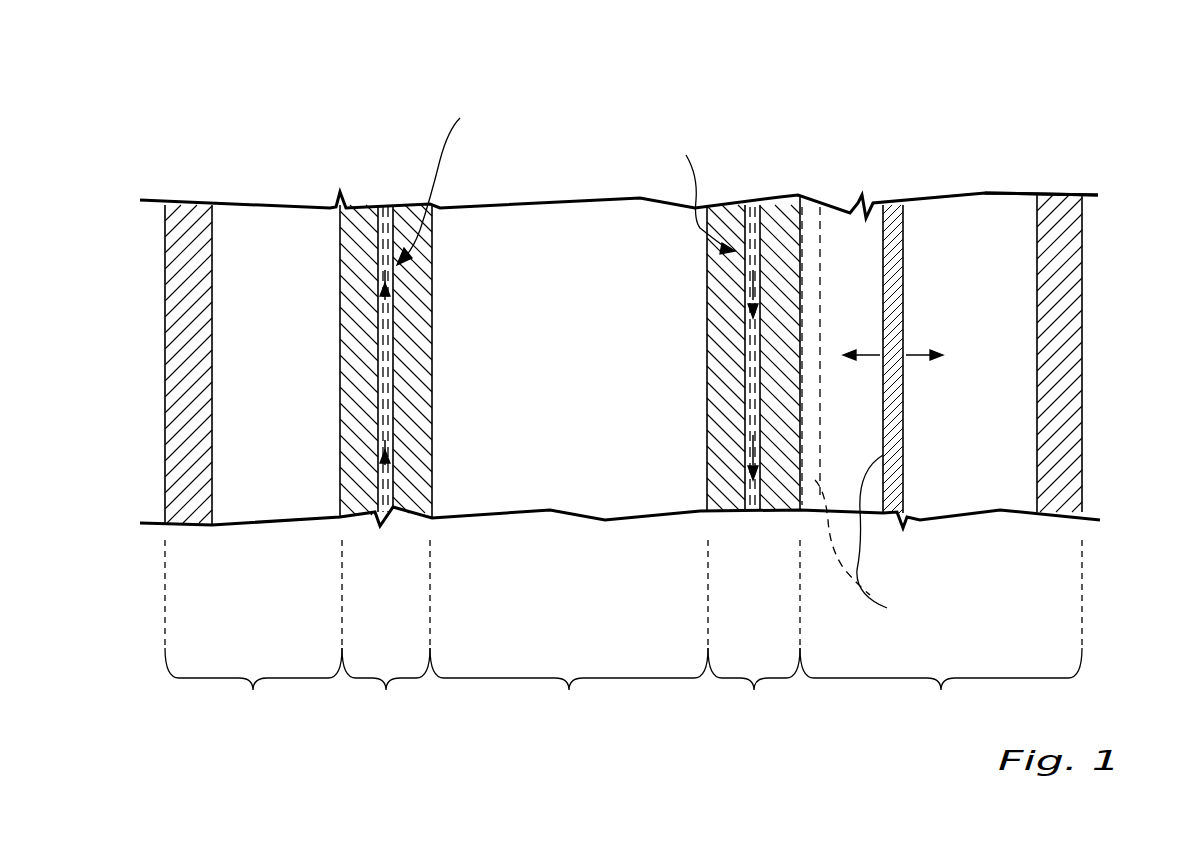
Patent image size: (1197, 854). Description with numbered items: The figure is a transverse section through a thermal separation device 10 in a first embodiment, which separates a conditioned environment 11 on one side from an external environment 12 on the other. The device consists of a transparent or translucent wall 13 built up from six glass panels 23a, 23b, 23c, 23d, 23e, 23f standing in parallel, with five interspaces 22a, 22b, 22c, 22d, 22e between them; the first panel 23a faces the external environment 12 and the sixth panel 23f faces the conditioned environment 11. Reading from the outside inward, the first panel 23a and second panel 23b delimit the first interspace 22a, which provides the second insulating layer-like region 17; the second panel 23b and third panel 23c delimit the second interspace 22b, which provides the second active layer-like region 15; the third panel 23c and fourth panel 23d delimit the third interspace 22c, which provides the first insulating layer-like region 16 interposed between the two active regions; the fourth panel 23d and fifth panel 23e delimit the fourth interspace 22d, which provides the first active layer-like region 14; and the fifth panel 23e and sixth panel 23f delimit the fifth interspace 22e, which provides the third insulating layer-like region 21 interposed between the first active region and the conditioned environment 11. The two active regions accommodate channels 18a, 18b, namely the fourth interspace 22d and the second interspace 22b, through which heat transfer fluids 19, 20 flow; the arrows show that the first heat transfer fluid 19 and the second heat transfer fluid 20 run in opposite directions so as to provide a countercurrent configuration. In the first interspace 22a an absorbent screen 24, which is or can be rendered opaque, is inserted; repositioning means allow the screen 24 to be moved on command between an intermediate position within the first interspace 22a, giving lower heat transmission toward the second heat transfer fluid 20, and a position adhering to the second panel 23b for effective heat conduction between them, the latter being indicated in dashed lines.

The thermal separation device 10 is at (1082, 128).
The conditioned environment 11 is at (148, 382).
The external environment 12 is at (1130, 376).
The transparent or translucent wall 13 is at (1095, 240).
The first active layer-like region 14 is at (386, 631).
The second active layer-like region 15 is at (754, 631).
The first insulating layer-like region 16 is at (569, 631).
The second insulating layer-like region 17 is at (941, 631).
The channel 18a is at (385, 527).
The channel 18b is at (752, 512).
The heat transfer fluid 19 is at (445, 183).
The heat transfer fluid 20 is at (698, 191).
The third insulating layer-like region 21 is at (253, 631).
The first interspace 22a is at (927, 225).
The second interspace 22b is at (752, 230).
The third interspace 22c is at (537, 320).
The fourth interspace 22d is at (385, 245).
The fifth interspace 22e is at (265, 255).
The first panel 23a is at (1057, 265).
The second panel 23b is at (782, 205).
The third panel 23c is at (713, 325).
The fourth panel 23d is at (428, 283).
The fifth panel 23e is at (355, 262).
The sixth panel 23f is at (183, 242).
The absorbent screen 24 is at (854, 425).